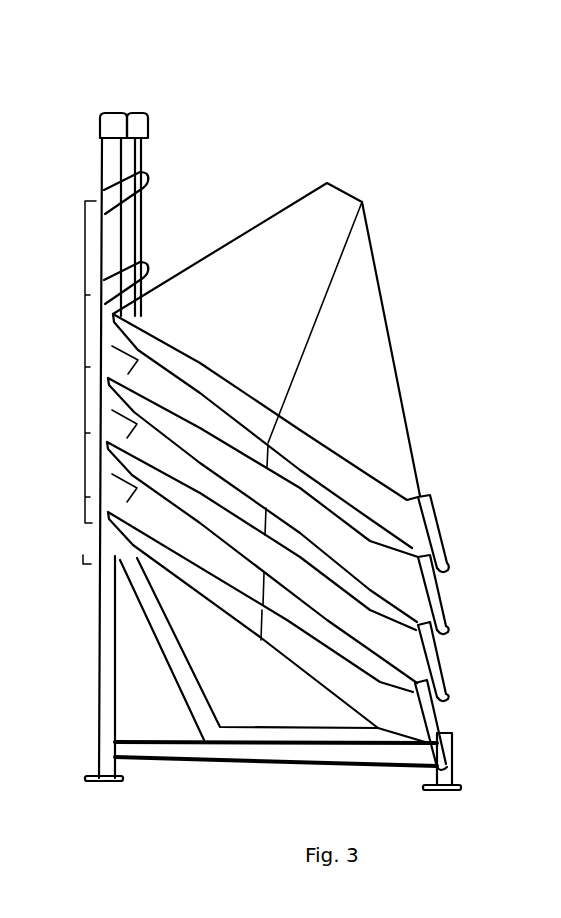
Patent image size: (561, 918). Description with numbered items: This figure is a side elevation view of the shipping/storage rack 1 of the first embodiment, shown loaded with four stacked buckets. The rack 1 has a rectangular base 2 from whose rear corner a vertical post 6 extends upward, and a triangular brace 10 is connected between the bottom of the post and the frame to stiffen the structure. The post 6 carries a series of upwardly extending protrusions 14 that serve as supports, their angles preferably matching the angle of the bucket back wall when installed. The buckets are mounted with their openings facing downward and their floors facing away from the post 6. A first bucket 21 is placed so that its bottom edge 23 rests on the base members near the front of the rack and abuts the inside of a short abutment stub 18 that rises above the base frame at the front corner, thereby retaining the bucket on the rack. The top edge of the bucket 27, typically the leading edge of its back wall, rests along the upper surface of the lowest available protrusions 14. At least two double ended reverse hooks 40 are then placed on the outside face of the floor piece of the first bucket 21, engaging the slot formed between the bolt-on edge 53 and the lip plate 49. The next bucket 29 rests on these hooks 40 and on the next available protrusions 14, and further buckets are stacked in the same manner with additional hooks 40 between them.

The rack 1 is at (208, 96).
The post 6 is at (95, 157).
The protrusions 14 is at (71, 362).
The top edge of the bucket 27 is at (117, 521).
The triangular brace 10 is at (172, 745).
The rectangular base 2 is at (391, 772).
The edge of the lowermost bucket 23 is at (453, 764).
The abutment stub 18 is at (447, 728).
The first bucket 21 is at (412, 723).
The bolt-on edge 53 is at (440, 515).
The next bucket 29 is at (412, 662).
The double ended reverse hooks 40 is at (449, 562).
The lip plate 49 is at (418, 516).